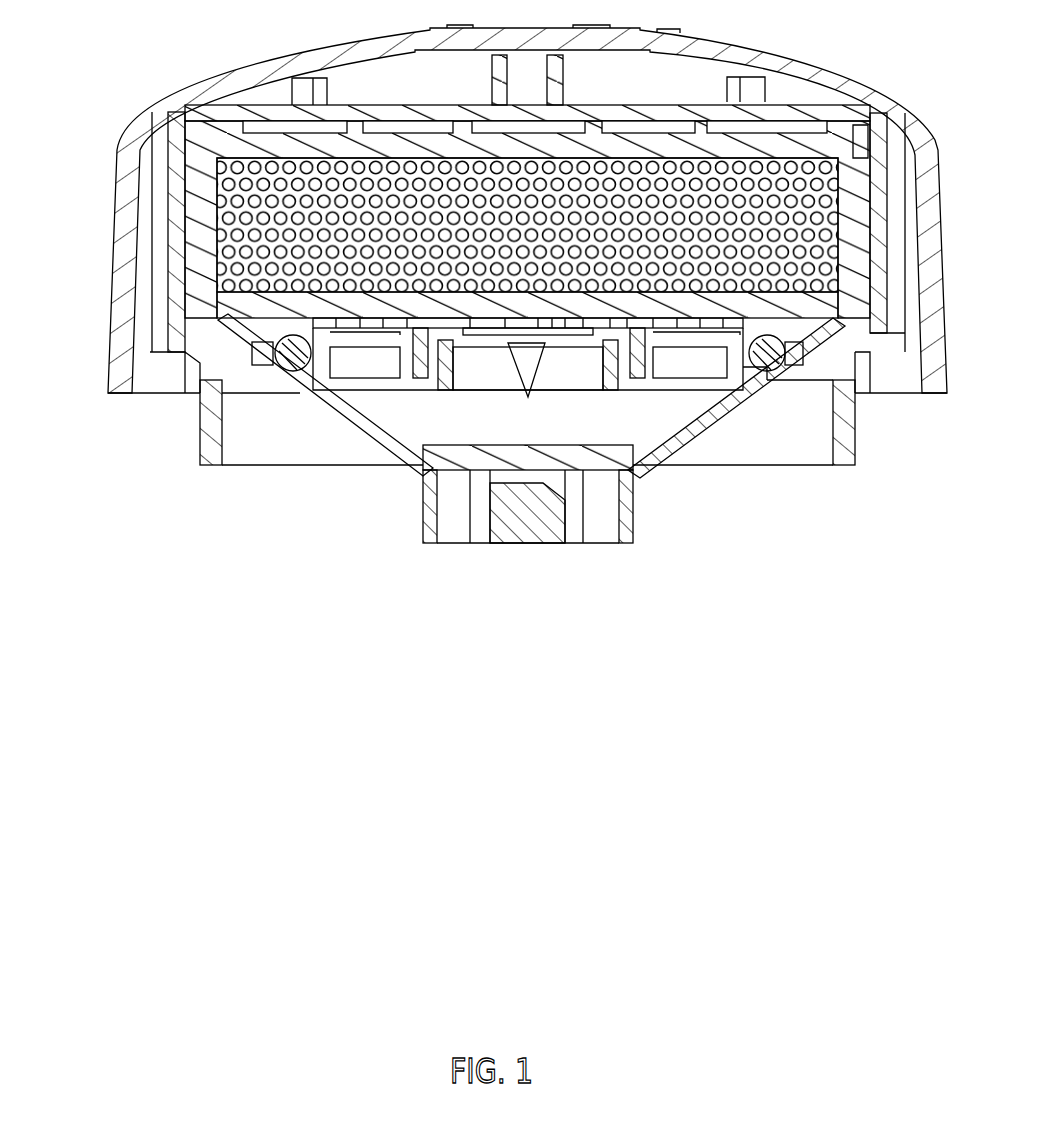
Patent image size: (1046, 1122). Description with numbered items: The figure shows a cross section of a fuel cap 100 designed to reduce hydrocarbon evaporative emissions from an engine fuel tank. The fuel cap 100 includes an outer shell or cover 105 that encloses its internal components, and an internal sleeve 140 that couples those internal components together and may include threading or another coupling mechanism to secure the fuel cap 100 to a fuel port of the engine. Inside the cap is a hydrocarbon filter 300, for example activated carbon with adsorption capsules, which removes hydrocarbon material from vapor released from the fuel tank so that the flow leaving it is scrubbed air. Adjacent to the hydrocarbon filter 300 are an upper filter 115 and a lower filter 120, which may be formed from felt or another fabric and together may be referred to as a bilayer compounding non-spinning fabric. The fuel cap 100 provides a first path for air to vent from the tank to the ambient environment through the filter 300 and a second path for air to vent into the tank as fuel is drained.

The fuel cap 100 is at (501, 333).
The outer shell or cover 105 is at (118, 184).
The upper filter 115 is at (795, 146).
The lower filter 120 is at (783, 340).
The internal sleeve 140 is at (328, 410).
The hydrocarbon filter 300 is at (555, 245).